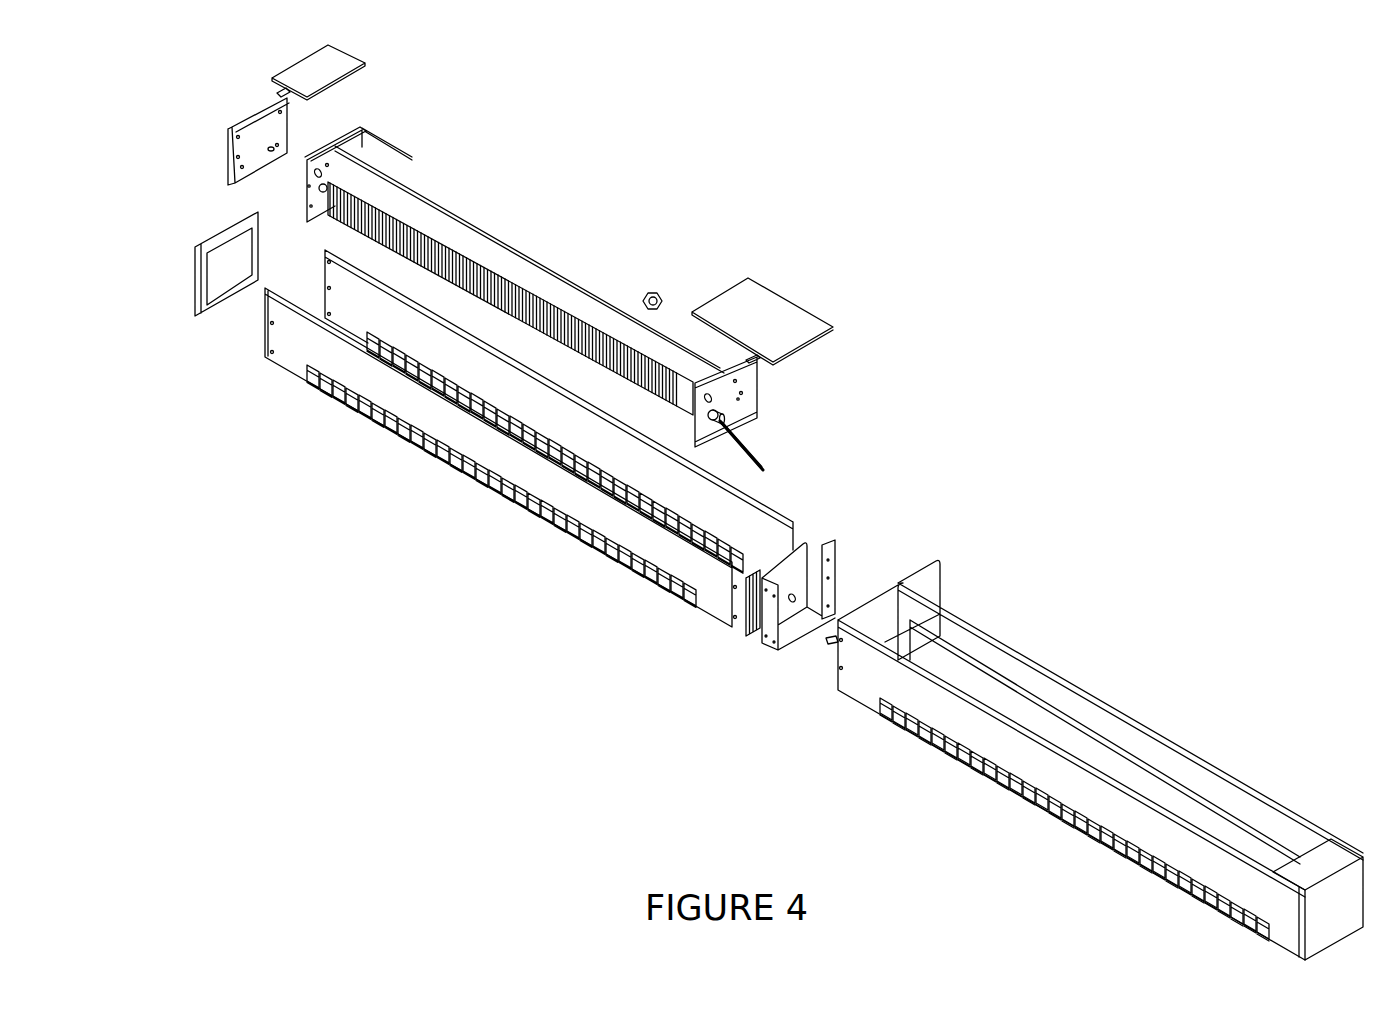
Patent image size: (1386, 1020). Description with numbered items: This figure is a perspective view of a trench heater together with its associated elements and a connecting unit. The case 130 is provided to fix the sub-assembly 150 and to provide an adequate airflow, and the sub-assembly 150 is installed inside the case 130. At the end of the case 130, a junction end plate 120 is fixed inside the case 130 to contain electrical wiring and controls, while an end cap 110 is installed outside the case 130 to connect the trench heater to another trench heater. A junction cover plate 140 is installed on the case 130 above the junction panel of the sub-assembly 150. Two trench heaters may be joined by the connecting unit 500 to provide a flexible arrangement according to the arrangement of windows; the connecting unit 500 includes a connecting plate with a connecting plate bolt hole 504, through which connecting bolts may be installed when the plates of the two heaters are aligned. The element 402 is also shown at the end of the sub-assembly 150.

The end cap 110 is at (193, 293).
The junction end plate 120 is at (230, 127).
The case 130 is at (503, 490).
The junction cover plate 140 is at (352, 55).
The sub-assembly 150 is at (619, 248).
The wire lead 402 is at (755, 458).
The connecting unit 500 is at (740, 625).
The connecting plate bolt hole 504 is at (783, 650).